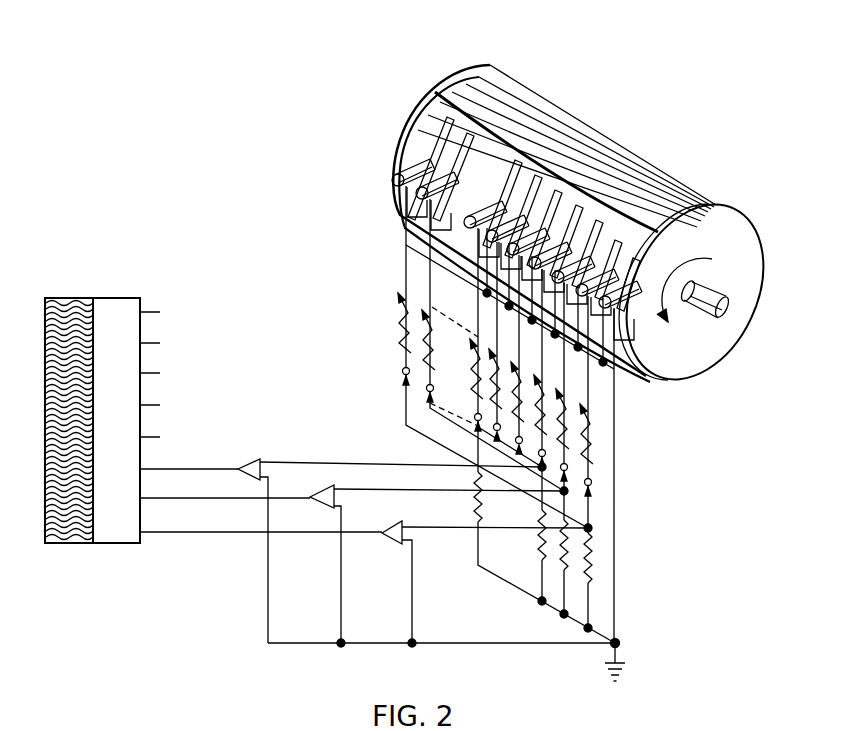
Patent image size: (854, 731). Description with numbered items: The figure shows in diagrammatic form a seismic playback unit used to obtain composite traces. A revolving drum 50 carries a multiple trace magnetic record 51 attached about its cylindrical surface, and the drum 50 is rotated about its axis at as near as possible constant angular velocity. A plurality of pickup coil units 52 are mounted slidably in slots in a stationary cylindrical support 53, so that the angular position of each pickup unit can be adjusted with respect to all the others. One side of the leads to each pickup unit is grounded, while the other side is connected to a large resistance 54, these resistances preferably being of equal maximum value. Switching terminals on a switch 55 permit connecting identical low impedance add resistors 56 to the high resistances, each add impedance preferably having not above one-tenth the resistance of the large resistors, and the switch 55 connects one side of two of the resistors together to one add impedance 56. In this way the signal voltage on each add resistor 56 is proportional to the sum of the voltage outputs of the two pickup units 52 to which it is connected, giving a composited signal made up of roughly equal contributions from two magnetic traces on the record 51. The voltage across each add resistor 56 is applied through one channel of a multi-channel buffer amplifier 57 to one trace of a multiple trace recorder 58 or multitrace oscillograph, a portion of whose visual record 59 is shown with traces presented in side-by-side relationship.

The revolving drum 50 is at (427, 112).
The multiple trace magnetic record 51 is at (530, 98).
The pickup coil units 52 is at (705, 372).
The stationary cylindrical support 53 is at (458, 112).
The large resistance 54 is at (627, 447).
The switch 55 is at (402, 372).
The add resistors 56 is at (588, 580).
The multi-channel buffer amplifier 57 is at (395, 540).
The multiple trace recorder 58 is at (125, 300).
The record 59 is at (53, 297).